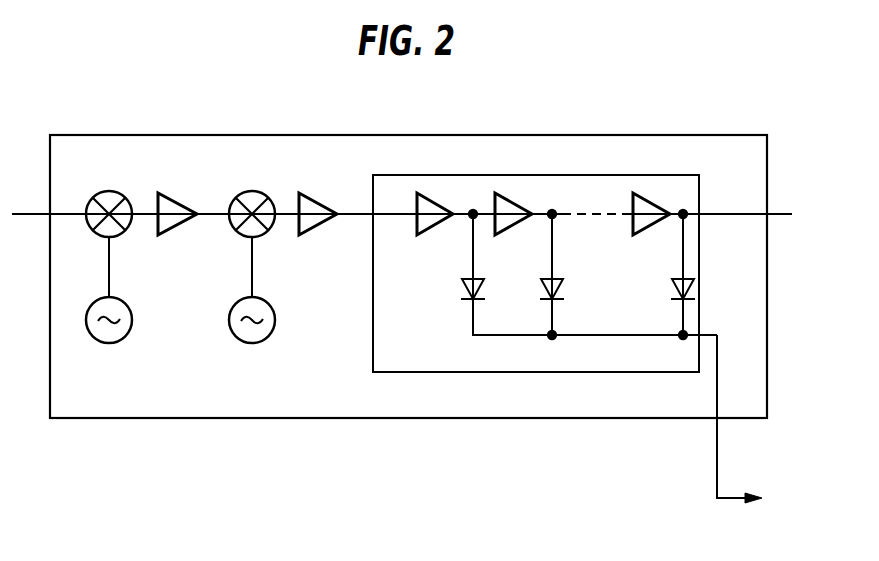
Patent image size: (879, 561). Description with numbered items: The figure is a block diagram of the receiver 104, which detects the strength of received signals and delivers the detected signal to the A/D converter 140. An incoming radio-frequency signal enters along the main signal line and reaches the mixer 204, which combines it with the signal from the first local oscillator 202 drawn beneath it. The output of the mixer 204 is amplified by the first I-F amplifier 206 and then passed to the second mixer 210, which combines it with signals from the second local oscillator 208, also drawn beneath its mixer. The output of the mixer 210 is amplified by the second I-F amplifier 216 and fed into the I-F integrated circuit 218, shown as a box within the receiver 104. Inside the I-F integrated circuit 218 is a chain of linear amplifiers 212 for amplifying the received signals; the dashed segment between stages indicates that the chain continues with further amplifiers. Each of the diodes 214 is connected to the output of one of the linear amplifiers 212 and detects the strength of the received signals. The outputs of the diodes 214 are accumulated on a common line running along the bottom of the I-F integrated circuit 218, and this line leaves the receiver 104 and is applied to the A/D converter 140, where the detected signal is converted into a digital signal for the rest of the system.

The receiver 104 is at (500, 135).
The first local oscillator 202 is at (128, 300).
The mixer 204 is at (121, 192).
The first I-F amplifier 206 is at (184, 195).
The second local oscillator 208 is at (271, 300).
The mixer 210 is at (264, 192).
The second I-F amplifier 216 is at (323, 195).
The I-F integrated circuit 218 is at (407, 175).
The linear amplifiers 212 is at (520, 200).
The diodes 214 is at (567, 289).
The A/D converter 140 is at (744, 434).